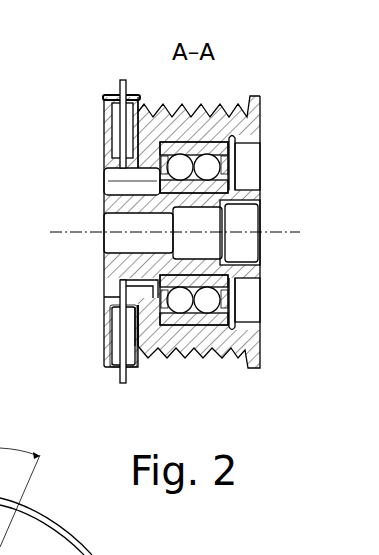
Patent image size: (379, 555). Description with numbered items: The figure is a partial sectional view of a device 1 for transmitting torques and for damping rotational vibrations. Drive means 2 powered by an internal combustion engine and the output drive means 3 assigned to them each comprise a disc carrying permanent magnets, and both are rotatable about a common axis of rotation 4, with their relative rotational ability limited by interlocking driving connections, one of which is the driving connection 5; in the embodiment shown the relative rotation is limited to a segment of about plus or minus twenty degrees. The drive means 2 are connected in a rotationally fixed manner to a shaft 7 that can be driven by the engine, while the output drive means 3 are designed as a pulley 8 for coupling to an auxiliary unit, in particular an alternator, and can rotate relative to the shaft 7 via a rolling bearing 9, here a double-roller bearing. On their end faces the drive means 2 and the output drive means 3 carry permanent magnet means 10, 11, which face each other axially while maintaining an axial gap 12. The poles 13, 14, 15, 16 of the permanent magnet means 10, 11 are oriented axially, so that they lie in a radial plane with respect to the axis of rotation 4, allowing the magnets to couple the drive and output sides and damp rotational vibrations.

The device 1 is at (203, 380).
The drive means 2 is at (102, 366).
The output drive means 3 is at (248, 130).
The axis of rotation 4 is at (243, 232).
The driving connection 5 is at (70, 501).
The shaft 7 is at (253, 196).
The pulley 8 is at (215, 105).
The rolling bearing 9 is at (238, 279).
The permanent magnet means 10 is at (108, 133).
The permanent magnet means 11 is at (140, 122).
The axial gap 12 is at (119, 87).
The pole 13 is at (110, 350).
The pole 14 is at (128, 380).
The pole 15 is at (130, 325).
The pole 16 is at (118, 322).